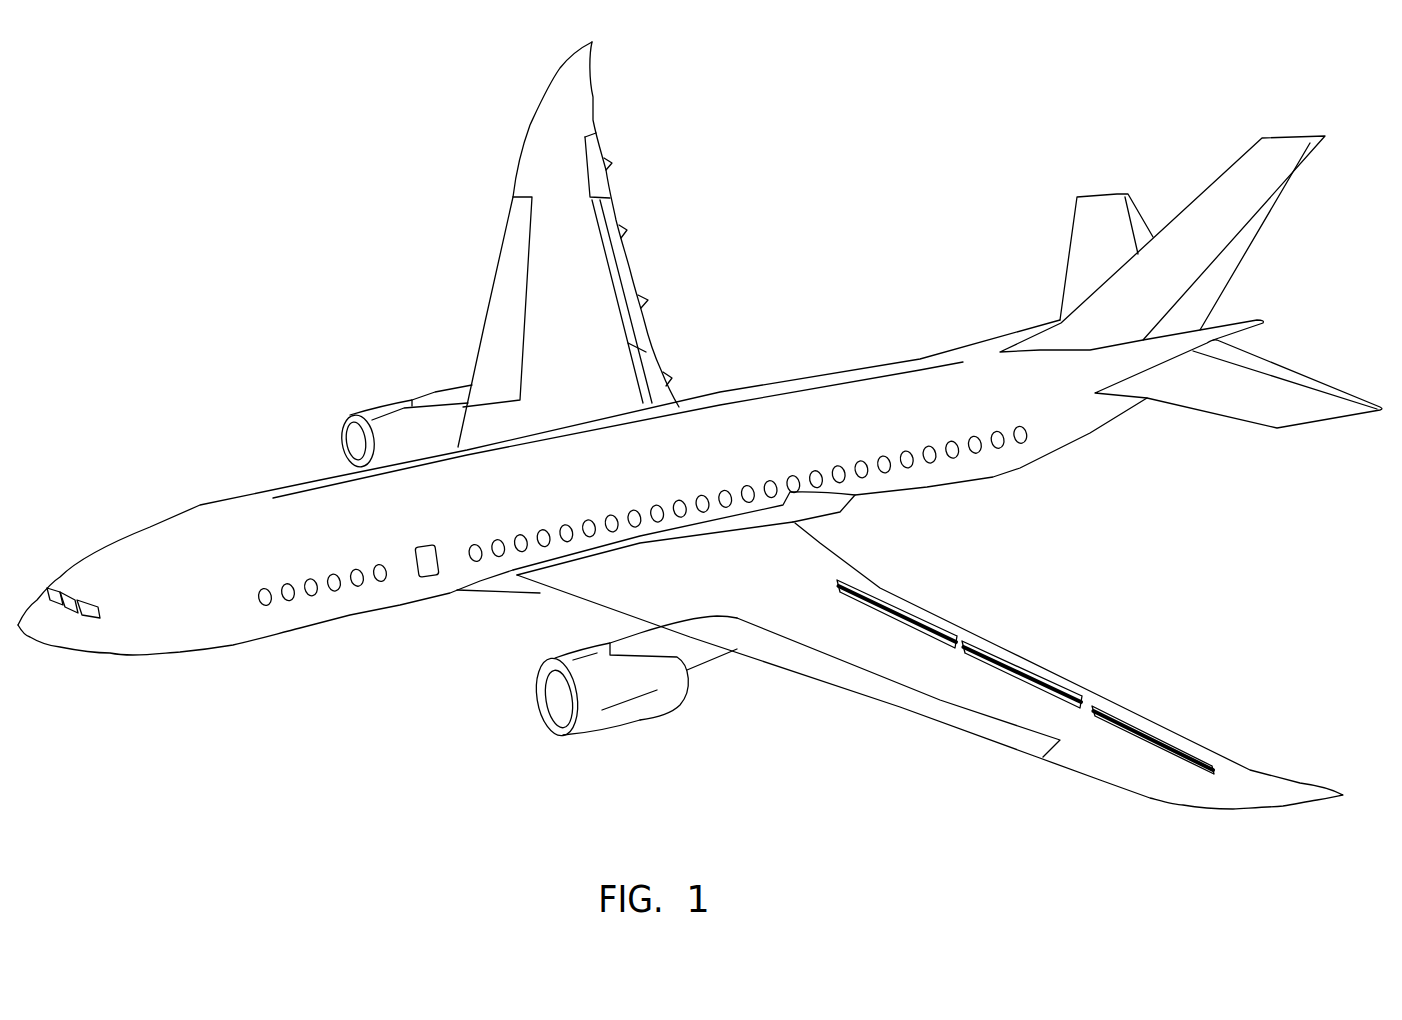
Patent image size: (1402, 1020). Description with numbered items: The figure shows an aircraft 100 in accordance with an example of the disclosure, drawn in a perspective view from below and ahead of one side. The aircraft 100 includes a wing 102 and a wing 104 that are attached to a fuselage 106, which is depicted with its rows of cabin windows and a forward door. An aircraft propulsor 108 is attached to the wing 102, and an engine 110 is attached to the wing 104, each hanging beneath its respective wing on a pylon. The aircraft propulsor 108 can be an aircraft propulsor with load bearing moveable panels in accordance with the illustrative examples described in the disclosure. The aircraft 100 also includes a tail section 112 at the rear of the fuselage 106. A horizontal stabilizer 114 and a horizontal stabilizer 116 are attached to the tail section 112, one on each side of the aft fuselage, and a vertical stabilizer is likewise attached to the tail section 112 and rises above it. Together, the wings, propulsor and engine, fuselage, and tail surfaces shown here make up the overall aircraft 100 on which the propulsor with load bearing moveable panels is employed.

The aircraft 100 is at (297, 196).
The wing 102 is at (593, 75).
The wing 104 is at (1188, 806).
The fuselage 106 is at (200, 505).
The aircraft propulsor 108 is at (385, 400).
The engine 110 is at (627, 726).
The tail section 112 is at (1140, 462).
The horizontal stabilizer 114 is at (1067, 258).
The horizontal stabilizer 116 is at (1270, 226).